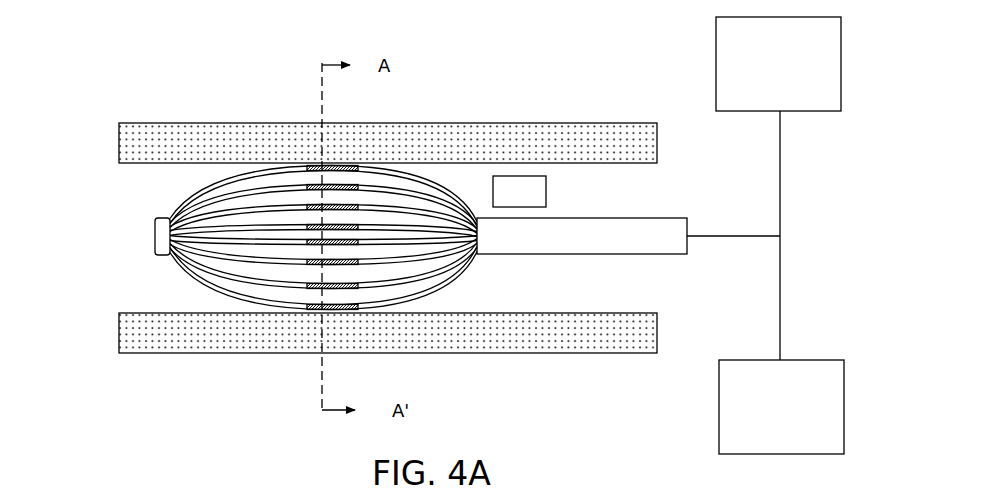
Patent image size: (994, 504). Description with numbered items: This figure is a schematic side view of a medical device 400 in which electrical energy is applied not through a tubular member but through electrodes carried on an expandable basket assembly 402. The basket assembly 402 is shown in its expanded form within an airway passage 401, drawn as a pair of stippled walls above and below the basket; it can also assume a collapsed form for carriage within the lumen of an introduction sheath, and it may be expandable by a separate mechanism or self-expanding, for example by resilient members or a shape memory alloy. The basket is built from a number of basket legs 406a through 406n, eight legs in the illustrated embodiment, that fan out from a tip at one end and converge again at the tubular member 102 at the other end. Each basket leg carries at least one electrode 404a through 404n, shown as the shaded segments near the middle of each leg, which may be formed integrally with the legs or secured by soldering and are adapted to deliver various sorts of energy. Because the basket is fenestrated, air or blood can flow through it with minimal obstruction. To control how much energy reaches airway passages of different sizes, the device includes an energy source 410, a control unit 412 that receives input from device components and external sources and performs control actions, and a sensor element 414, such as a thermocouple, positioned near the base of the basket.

The medical device 400 is at (122, 272).
The airway passage 401 is at (620, 353).
The basket assembly 402 is at (328, 227).
The electrode 404a is at (380, 154).
The electrode 404n is at (362, 334).
The basket leg 406a is at (435, 193).
The basket leg 406n is at (432, 285).
The tubular member 102 is at (625, 254).
The energy source 410 is at (778, 64).
The control unit 412 is at (781, 407).
The sensor element 414 is at (519, 191).